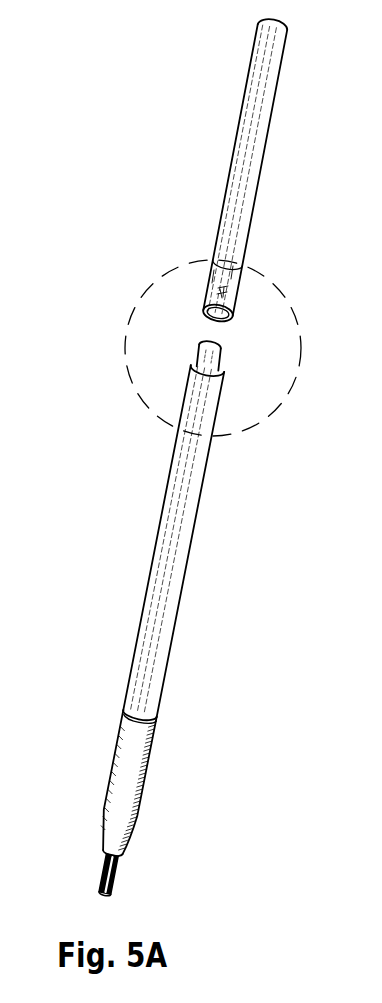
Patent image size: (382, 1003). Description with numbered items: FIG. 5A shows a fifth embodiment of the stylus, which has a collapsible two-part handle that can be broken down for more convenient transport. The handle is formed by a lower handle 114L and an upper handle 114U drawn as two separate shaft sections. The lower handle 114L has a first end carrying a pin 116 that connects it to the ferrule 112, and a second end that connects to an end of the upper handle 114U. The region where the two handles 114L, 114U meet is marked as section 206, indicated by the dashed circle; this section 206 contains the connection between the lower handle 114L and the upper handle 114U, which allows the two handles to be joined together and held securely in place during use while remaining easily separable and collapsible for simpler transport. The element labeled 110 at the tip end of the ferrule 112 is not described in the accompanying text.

The upper shaft portion 114U is at (238, 190).
The lower shaft portion 114L is at (180, 490).
The shaft junction / coupling region 206 is at (300, 421).
The band / collar 116 is at (135, 713).
The handle / grip 112 is at (128, 762).
The tip 110 is at (102, 873).